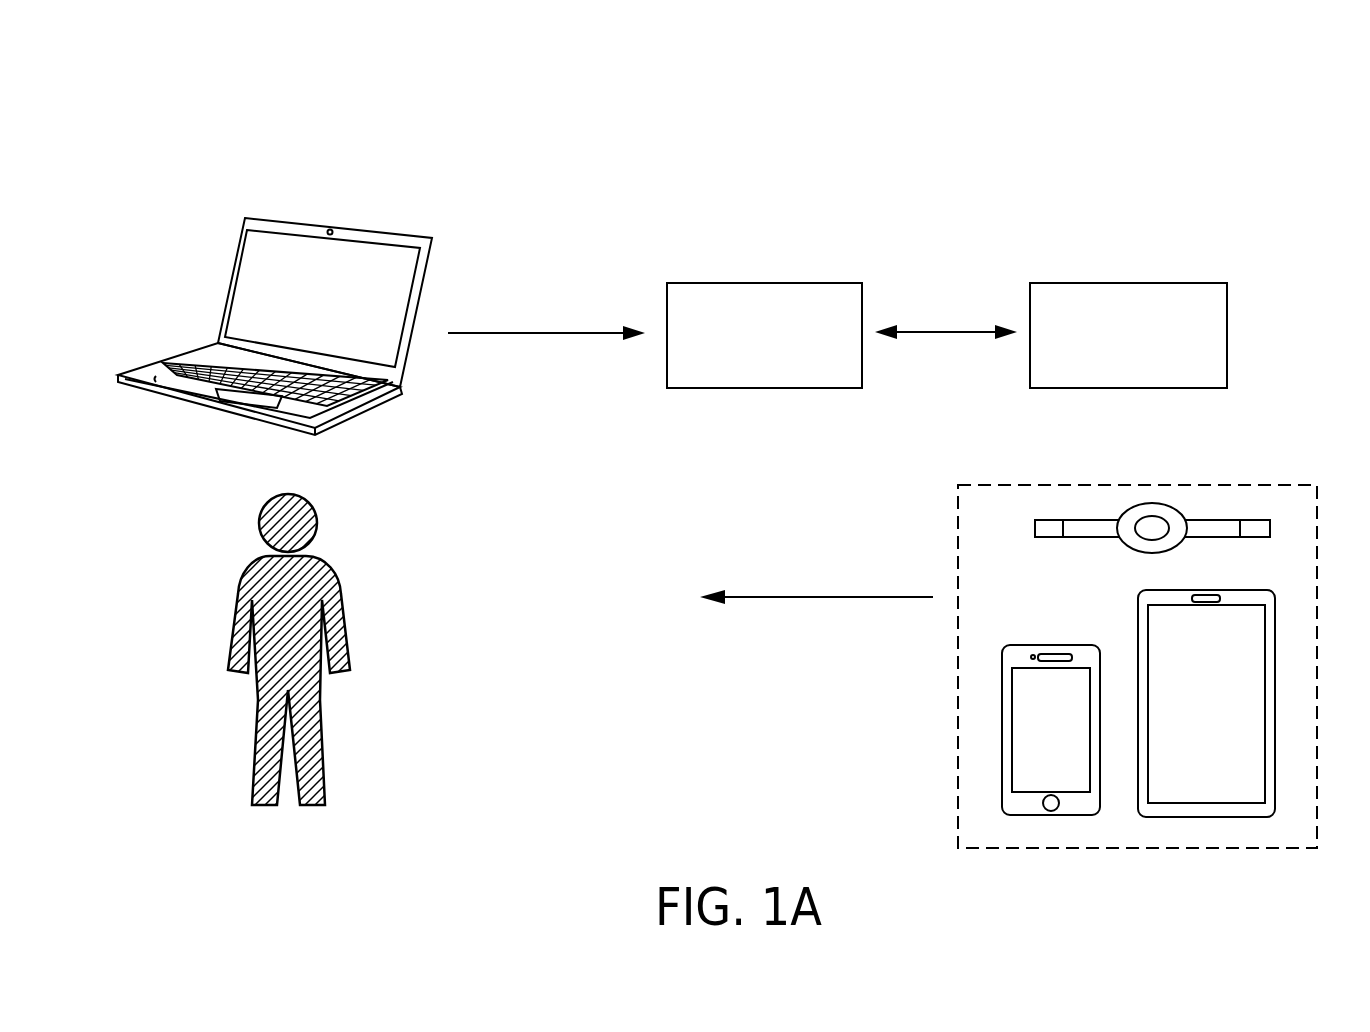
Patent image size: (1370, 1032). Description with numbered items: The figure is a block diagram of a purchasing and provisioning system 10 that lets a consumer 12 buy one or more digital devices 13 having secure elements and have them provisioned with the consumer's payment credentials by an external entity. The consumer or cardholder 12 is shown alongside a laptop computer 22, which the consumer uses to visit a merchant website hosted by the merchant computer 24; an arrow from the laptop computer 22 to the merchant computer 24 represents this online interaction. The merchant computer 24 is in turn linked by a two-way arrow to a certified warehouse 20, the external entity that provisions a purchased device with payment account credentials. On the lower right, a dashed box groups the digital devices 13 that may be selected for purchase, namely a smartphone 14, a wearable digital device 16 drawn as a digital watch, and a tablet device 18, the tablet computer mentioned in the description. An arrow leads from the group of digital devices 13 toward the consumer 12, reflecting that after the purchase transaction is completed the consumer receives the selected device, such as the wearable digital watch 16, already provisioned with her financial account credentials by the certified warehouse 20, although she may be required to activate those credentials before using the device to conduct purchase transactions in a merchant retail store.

The purchasing and provisioning system 10 is at (868, 96).
The consumer 12 is at (368, 519).
The digital devices 13 is at (958, 735).
The smartphone 14 is at (1055, 817).
The wearable digital device 16 is at (1255, 520).
The tablet 18 is at (1202, 817).
The certified warehouse 20 is at (1127, 283).
The laptop computer 22 is at (352, 227).
The merchant computer 24 is at (762, 283).